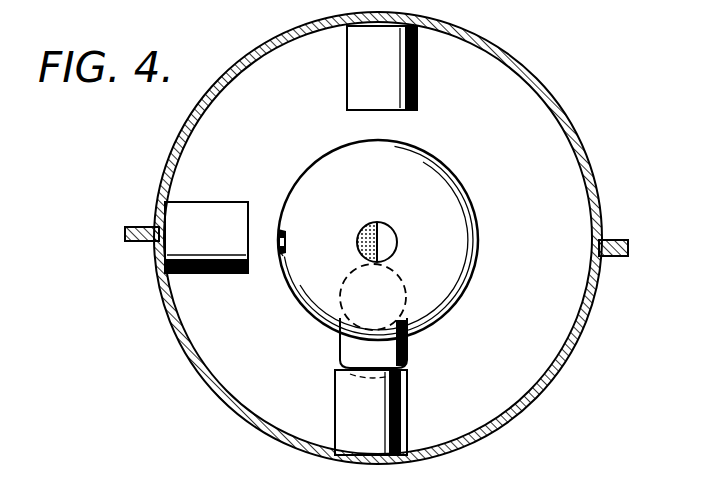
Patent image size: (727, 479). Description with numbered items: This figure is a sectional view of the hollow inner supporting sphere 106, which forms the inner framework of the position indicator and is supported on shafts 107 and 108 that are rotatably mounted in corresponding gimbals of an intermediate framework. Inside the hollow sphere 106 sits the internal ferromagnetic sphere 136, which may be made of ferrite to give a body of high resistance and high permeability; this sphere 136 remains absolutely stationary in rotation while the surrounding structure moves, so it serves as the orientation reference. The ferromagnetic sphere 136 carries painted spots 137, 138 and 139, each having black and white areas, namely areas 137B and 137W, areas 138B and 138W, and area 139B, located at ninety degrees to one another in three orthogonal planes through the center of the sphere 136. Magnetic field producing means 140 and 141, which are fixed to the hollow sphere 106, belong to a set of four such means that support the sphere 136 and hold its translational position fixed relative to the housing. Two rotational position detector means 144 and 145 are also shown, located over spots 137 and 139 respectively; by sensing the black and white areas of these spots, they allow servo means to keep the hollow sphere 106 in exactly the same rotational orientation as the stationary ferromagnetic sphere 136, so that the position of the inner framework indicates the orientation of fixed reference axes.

The hollow sphere 106 is at (578, 346).
The shaft 107 is at (137, 243).
The shaft 108 is at (613, 240).
The ferromagnetic sphere 136 is at (478, 202).
The spot 137 is at (287, 242).
The black area 137B is at (279, 234).
The white area 137W is at (281, 250).
The spot 138 is at (428, 212).
The black area 138B is at (357, 241).
The white area 138W is at (397, 241).
The spot 139 is at (373, 297).
The black area 139B is at (362, 342).
The magnetic field producing means 140 is at (390, 92).
The magnetic field producing means 141 is at (410, 302).
The rotational position detector means 144 is at (213, 274).
The rotational position detector means 145 is at (383, 405).